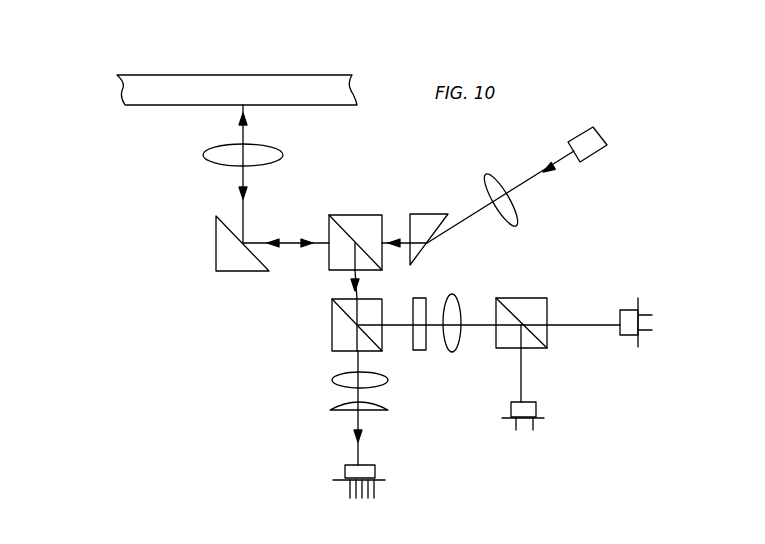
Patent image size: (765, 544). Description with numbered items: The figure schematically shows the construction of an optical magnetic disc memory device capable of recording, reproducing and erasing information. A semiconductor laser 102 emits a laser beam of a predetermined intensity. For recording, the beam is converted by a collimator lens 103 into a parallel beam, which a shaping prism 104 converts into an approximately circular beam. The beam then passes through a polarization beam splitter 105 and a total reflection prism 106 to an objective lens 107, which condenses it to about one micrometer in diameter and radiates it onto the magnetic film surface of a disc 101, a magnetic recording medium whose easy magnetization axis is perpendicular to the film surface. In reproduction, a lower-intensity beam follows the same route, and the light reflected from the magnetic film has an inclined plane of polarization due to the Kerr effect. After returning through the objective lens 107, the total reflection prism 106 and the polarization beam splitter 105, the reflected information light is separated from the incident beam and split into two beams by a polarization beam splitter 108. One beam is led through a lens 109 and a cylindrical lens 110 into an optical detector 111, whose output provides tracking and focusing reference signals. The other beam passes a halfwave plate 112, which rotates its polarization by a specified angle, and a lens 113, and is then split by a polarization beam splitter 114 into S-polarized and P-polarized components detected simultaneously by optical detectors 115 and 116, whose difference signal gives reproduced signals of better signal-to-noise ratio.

The disc 101 is at (268, 75).
The semiconductor laser 102 is at (593, 127).
The collimator lens 103 is at (488, 175).
The shaping prism 104 is at (410, 214).
The polarization beam splitter 105 is at (329, 215).
The total reflection prism 106 is at (216, 226).
The objective lens 107 is at (225, 167).
The polarization beam splitter 108 is at (332, 310).
The lens 109 is at (335, 378).
The cylindrical lens 110 is at (375, 403).
The optical detector 111 is at (375, 469).
The halfwave plate 112 is at (413, 298).
The lens 113 is at (455, 294).
The polarization beam splitter 114 is at (525, 298).
The optical detector 115 is at (627, 308).
The optical detector 116 is at (536, 415).